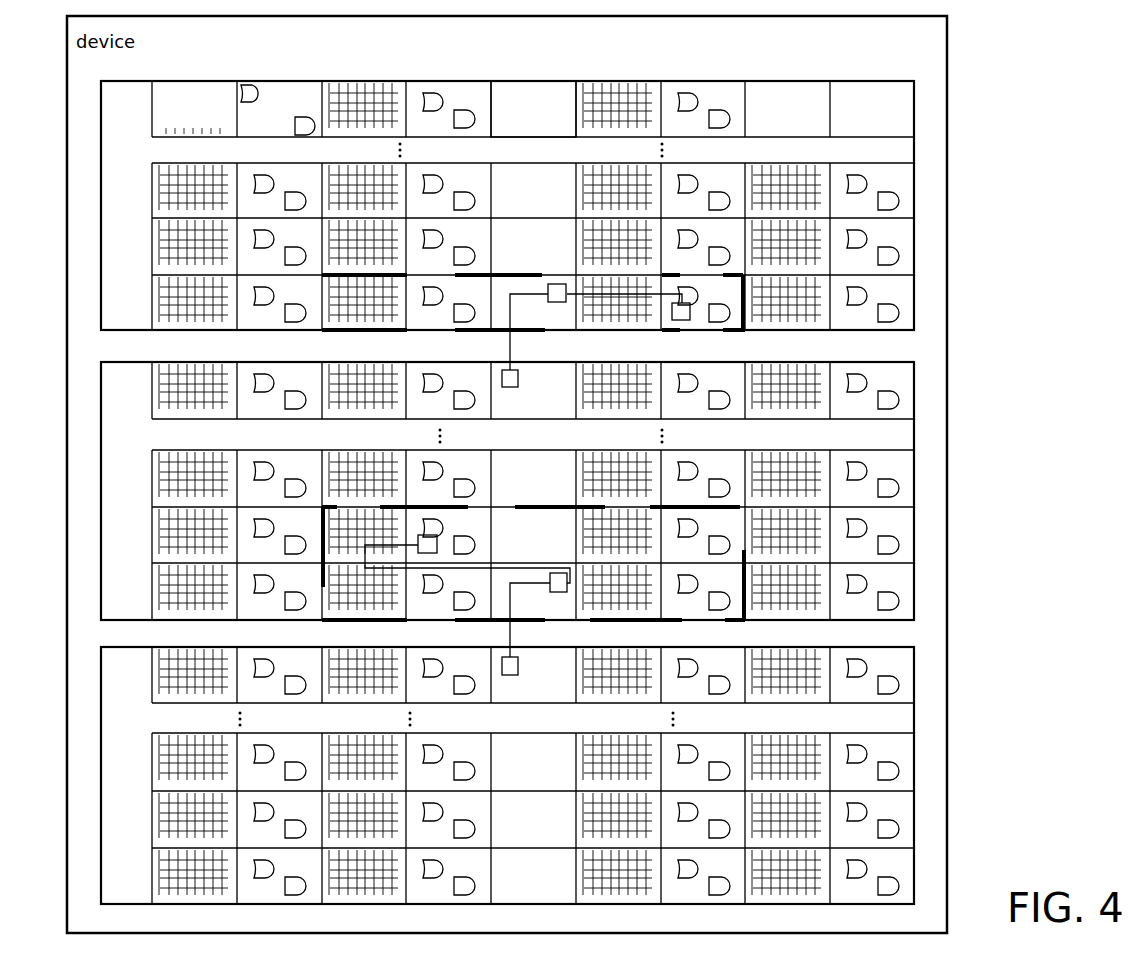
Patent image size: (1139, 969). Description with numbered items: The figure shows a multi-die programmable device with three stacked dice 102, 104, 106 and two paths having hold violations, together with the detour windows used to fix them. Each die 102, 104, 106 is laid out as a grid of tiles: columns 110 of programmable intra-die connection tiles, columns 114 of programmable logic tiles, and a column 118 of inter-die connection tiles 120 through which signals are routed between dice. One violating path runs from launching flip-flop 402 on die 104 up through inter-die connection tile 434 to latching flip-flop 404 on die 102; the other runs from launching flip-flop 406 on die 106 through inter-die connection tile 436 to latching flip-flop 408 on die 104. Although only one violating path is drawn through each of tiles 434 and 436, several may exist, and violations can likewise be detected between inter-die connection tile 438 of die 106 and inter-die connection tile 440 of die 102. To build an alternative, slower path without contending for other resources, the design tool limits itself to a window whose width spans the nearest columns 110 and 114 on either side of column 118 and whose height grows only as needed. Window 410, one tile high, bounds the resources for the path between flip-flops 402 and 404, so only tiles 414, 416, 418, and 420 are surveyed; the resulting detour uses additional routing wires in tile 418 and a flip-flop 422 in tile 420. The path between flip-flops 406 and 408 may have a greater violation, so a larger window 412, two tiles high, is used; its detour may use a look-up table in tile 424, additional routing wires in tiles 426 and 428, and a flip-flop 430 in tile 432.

The die 102 is at (141, 212).
The die 104 is at (141, 496).
The die 106 is at (141, 779).
The columns of programmable intra-die connection tiles 110 is at (380, 62).
The columns of programmable logic tiles 114 is at (463, 62).
The column of inter-die connection tiles 118 is at (543, 68).
The inter-die connection tiles 120 is at (505, 114).
The launching flip-flop 402 is at (510, 388).
The latching flip-flop 404 is at (556, 303).
The launching flip-flop 406 is at (510, 676).
The latching flip-flop 408 is at (557, 594).
The window 410 is at (548, 276).
The window 412 is at (538, 507).
The tile 414 is at (345, 333).
The tile 416 is at (430, 322).
The tile 418 is at (606, 318).
The tile 420 is at (700, 323).
The flip-flop 422 is at (680, 325).
The tile 424 is at (448, 605).
The tile 426 is at (370, 612).
The tile 428 is at (337, 513).
The flip-flop 430 is at (428, 535).
The tile 432 is at (482, 552).
The inter-die connection tile 434 is at (498, 322).
The inter-die connection tile 436 is at (498, 612).
The inter-die connection tile 438 is at (415, 405).
The inter-die connection tile 440 is at (533, 192).